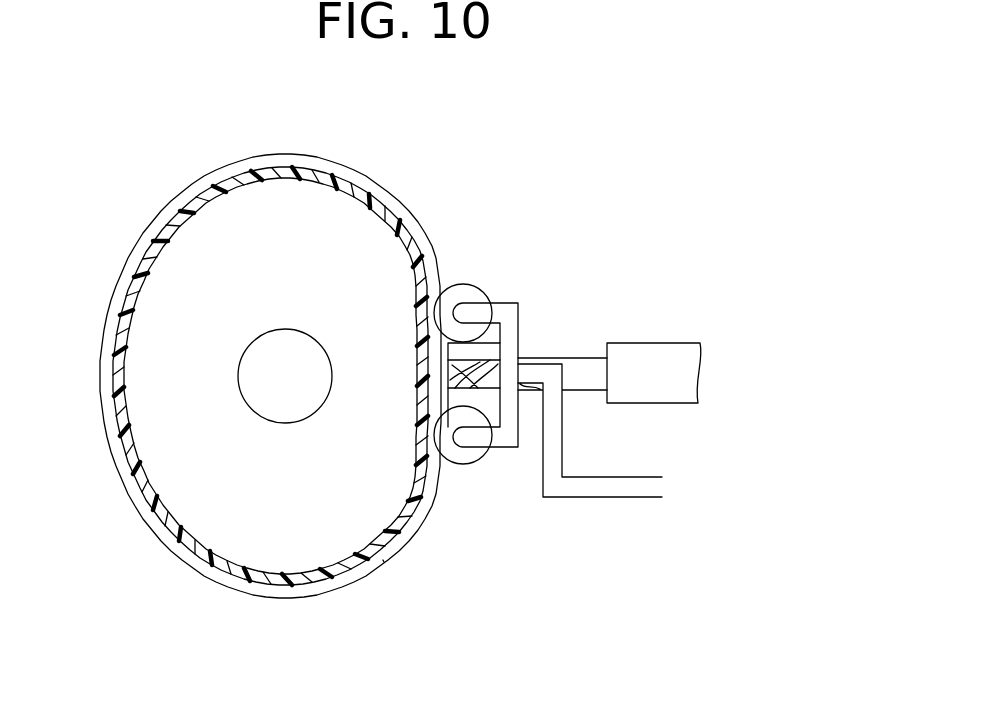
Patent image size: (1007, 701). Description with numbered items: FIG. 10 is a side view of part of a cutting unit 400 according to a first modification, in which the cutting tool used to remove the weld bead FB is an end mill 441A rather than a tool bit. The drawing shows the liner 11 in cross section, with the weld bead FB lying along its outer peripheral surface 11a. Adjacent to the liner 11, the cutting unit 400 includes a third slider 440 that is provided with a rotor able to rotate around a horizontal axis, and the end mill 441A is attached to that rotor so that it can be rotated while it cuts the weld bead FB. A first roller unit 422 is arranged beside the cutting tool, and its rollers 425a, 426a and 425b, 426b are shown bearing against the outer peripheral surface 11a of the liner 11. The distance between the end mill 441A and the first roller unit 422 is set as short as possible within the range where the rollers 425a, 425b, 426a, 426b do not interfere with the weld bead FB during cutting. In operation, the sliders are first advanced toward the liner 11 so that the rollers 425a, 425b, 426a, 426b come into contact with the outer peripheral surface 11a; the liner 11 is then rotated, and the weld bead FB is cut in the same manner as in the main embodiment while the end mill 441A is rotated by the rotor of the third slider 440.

The liner 11 is at (284, 168).
The outer peripheral surface 11a is at (362, 183).
The weld bead FB is at (382, 558).
The cutting unit 400 is at (600, 383).
The roller 425a is at (462, 283).
The roller 426a is at (518, 277).
The roller 425b is at (466, 468).
The roller 426b is at (520, 480).
The end mill 441A is at (480, 360).
The first roller unit 422 is at (567, 437).
The third slider 440 is at (670, 355).